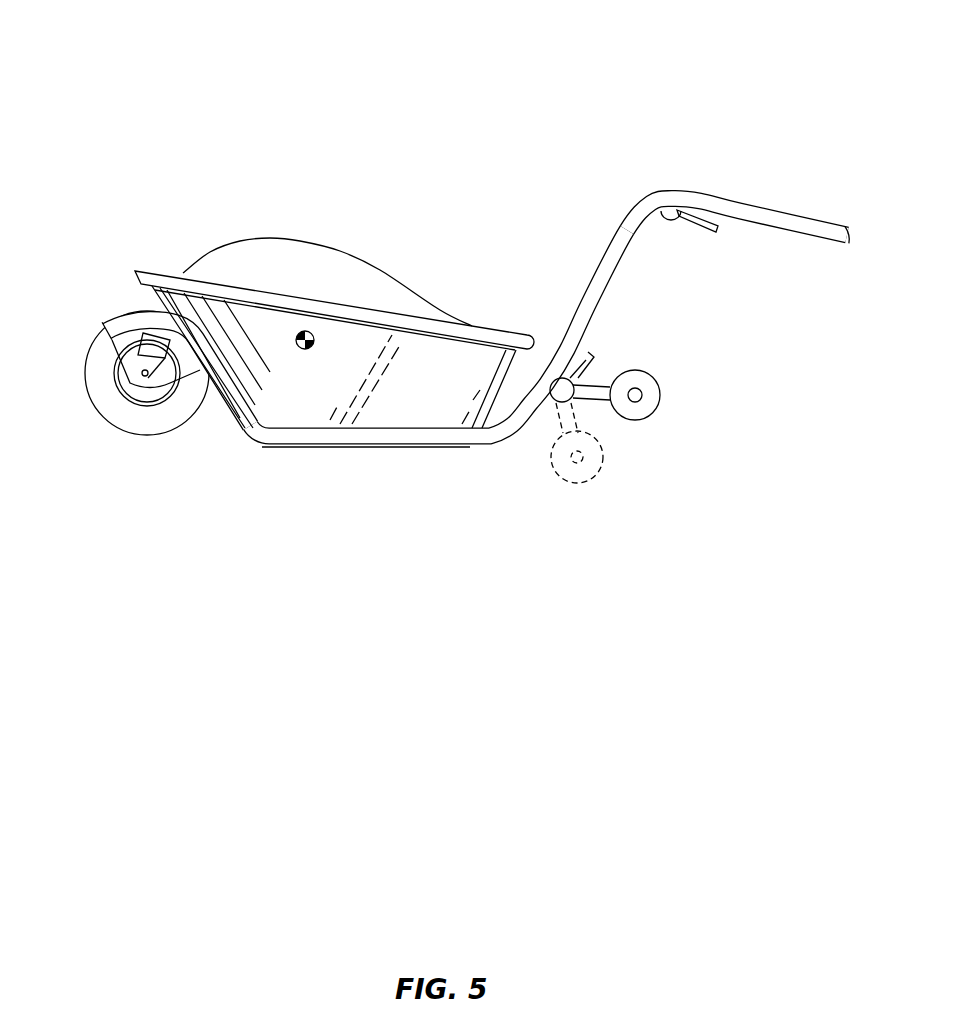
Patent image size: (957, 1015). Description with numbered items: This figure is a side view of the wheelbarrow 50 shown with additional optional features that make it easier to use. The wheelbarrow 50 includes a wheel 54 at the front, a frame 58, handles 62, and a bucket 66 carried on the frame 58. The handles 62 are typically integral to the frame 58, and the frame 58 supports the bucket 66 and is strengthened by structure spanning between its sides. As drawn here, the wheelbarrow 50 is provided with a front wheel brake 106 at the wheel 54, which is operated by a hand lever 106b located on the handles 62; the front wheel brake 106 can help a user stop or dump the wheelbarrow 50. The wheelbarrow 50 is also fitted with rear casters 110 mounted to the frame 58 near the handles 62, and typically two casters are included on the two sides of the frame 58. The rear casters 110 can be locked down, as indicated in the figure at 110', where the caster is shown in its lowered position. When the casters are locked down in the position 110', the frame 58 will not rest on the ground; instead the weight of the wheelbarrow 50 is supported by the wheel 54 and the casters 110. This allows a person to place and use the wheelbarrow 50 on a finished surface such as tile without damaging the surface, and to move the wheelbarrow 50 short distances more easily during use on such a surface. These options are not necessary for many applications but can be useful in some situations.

The wheelbarrow 50 is at (452, 289).
The wheel 54 is at (120, 412).
The frame 58 is at (362, 428).
The handles 62 is at (825, 228).
The bucket 66 is at (348, 342).
The front wheel brake 106 is at (140, 340).
The hand lever 106b is at (697, 228).
The rear casters 110 is at (653, 396).
The locked-down position of the rear casters 110' is at (629, 463).